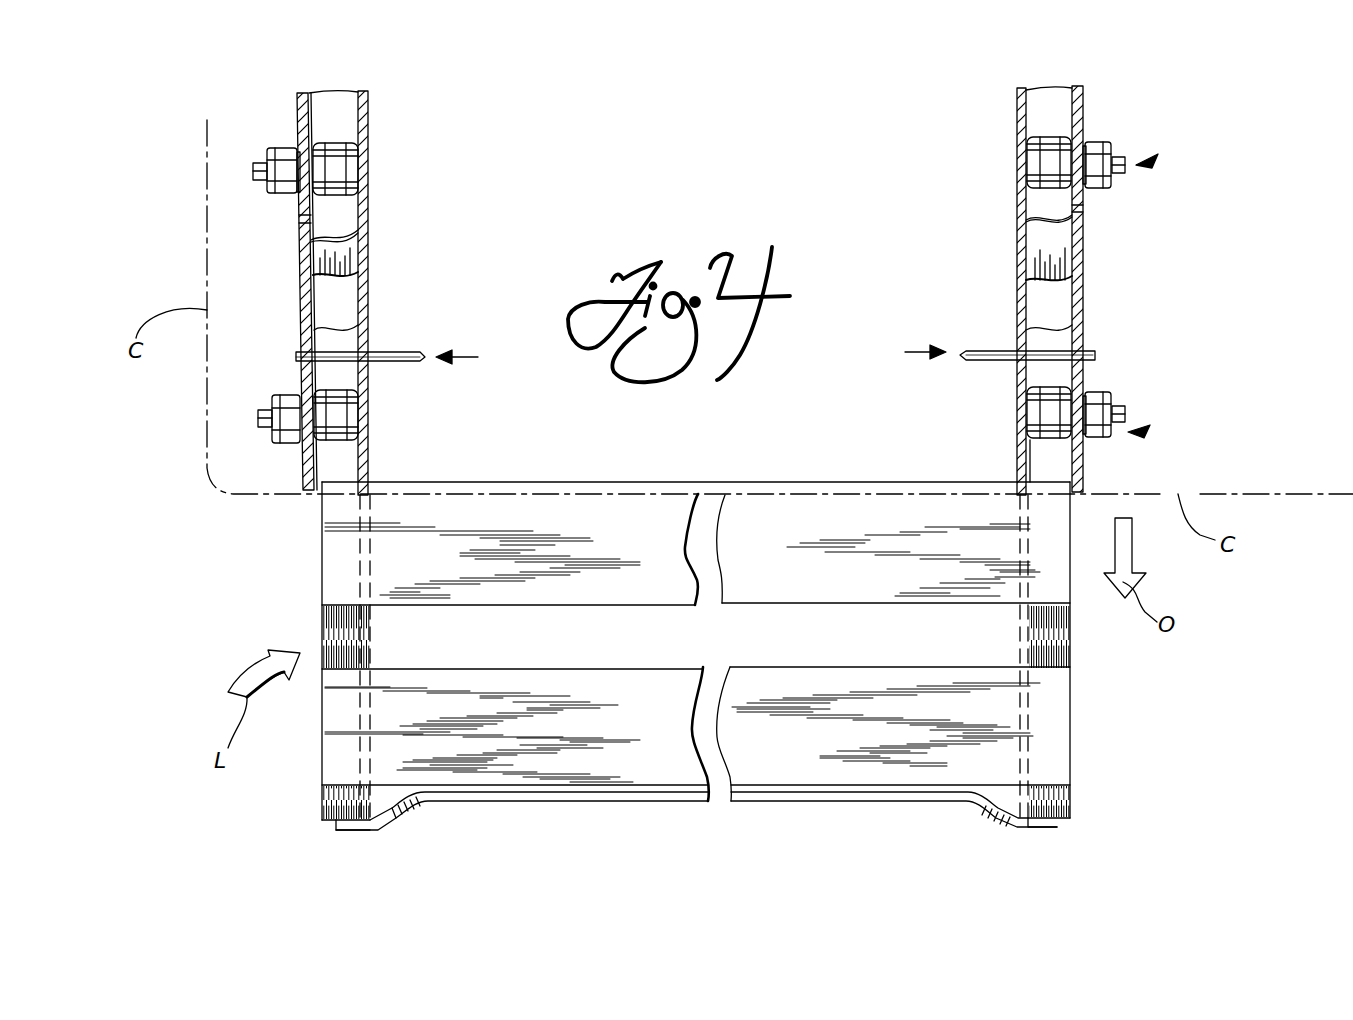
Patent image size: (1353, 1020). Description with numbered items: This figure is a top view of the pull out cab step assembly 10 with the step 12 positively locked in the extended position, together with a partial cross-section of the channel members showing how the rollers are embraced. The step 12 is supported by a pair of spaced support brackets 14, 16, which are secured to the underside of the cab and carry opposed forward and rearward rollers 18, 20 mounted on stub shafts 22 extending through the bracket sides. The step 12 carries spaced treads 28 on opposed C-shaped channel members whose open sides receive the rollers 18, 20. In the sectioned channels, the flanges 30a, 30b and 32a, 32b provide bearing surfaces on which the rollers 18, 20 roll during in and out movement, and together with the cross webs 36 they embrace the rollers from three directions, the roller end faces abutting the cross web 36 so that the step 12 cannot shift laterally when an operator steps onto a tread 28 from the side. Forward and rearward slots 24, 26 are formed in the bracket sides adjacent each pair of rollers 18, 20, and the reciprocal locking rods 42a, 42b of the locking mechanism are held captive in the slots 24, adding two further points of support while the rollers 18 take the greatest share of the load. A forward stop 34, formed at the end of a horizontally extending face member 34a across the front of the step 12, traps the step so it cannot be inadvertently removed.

The pull out cab step assembly 10 is at (1215, 637).
The step 12 is at (1088, 757).
The support bracket 14 is at (300, 92).
The support bracket 16 is at (1080, 232).
The forward roller 18 is at (340, 415).
The rearward roller 20 is at (343, 177).
The stub shaft 22 is at (1152, 163).
The forward slot 24 is at (296, 352).
The rearward slot 26 is at (300, 220).
The tread 28 is at (640, 690).
The flange of channel member 30a is at (355, 262).
The flange of channel member 30b is at (342, 105).
The upper flange of channel member 32a is at (1030, 245).
The lower flange of channel member 32b is at (1045, 103).
The forward stop 34 is at (352, 833).
The face member 34a is at (458, 808).
The cross web 36 is at (1030, 452).
The locking rod 42a is at (425, 356).
The locking rod 42b is at (1092, 355).